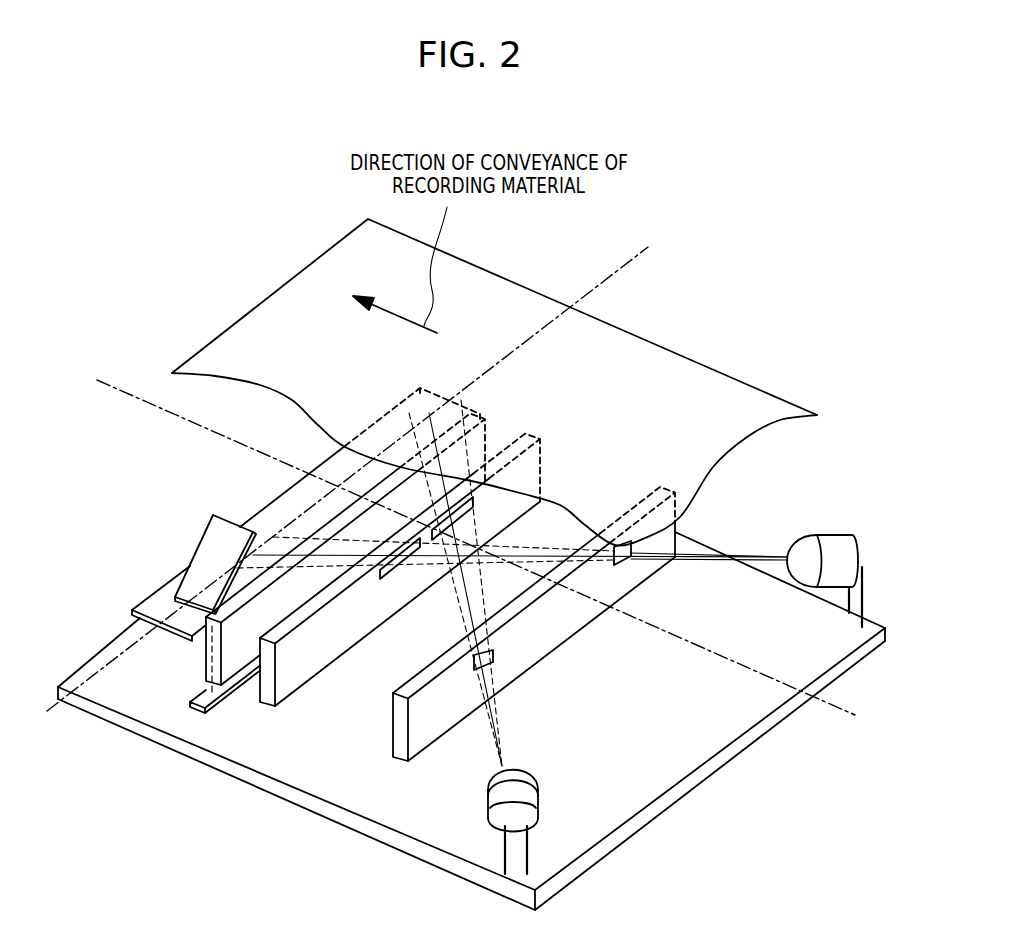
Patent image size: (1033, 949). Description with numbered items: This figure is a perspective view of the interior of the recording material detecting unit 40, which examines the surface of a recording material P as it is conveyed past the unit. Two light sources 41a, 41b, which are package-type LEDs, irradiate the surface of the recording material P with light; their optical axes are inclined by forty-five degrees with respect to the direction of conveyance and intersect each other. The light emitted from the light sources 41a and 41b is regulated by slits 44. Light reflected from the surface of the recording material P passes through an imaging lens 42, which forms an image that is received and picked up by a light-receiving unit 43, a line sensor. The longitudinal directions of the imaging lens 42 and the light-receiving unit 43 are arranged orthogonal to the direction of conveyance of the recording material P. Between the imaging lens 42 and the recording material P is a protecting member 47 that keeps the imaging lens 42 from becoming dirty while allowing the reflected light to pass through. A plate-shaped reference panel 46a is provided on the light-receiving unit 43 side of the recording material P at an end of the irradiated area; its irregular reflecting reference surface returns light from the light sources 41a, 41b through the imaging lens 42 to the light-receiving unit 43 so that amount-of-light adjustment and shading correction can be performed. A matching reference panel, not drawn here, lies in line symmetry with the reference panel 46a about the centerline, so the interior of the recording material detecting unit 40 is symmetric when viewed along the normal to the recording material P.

The recording material detecting unit 40 is at (693, 783).
The light source 41a is at (836, 547).
The light source 41b is at (497, 798).
The imaging lens 42 is at (205, 647).
The light-receiving unit 43 is at (190, 704).
The slits 44 is at (395, 710).
The reference panel 46a is at (208, 553).
The protecting member 47 is at (273, 510).
The recording material P is at (672, 357).